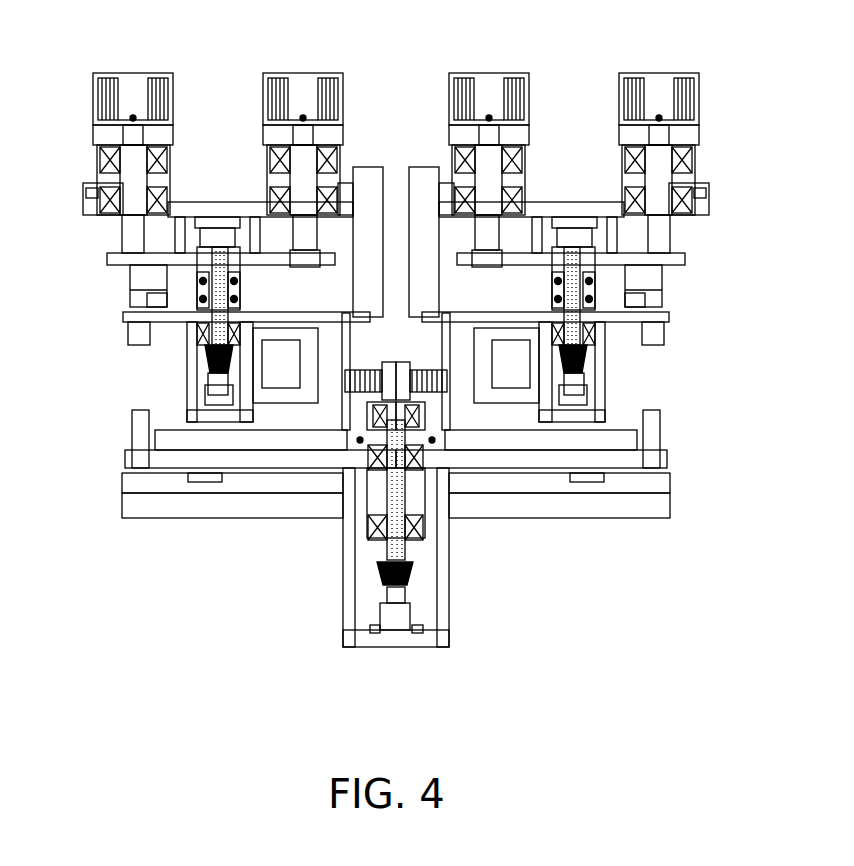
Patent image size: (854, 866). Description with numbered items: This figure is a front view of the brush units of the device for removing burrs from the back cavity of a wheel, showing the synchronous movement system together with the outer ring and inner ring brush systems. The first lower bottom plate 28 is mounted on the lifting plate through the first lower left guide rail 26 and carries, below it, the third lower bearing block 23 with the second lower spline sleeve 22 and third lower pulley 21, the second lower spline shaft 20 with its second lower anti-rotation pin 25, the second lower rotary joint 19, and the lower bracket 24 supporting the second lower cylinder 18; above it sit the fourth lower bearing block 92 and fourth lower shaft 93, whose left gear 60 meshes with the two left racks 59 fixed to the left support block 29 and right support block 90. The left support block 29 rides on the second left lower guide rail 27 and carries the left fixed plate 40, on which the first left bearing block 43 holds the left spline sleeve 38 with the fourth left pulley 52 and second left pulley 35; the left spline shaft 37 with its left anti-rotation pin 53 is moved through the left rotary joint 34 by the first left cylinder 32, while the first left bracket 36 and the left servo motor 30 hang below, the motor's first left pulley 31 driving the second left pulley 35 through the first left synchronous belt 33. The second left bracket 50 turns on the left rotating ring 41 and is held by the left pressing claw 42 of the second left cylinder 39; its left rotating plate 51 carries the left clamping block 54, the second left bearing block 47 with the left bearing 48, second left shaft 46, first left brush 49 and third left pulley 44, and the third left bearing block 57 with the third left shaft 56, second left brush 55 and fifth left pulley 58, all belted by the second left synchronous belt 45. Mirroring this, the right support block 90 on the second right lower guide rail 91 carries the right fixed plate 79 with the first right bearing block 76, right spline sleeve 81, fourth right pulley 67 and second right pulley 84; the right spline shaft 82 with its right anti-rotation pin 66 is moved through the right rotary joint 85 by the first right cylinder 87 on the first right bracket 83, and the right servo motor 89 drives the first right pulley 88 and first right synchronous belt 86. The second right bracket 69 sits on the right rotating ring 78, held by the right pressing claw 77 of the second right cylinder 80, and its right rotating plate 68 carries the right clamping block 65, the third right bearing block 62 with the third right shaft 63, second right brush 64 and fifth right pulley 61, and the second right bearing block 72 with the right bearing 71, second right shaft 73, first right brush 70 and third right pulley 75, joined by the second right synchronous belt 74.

The second lower cylinder 18 is at (397, 622).
The second lower rotary joint 19 is at (383, 616).
The second lower spline shaft 20 is at (397, 605).
The third lower pulley 21 is at (390, 585).
The second lower spline sleeve 22 is at (387, 553).
The third lower bearing block 23 is at (380, 528).
The lower bracket 24 is at (368, 515).
The second lower anti-rotation pin 25 is at (340, 425).
The first lower left guide rail 26 is at (300, 440).
The second left lower guide rail 27 is at (260, 462).
The first lower bottom plate 28 is at (215, 485).
The left support block 29 is at (150, 505).
The left servo motor 30 is at (125, 500).
The first left pulley 31 is at (124, 475).
The first left cylinder 32 is at (128, 452).
The first left synchronous belt 33 is at (157, 433).
The left rotary joint 34 is at (200, 418).
The second left pulley 35 is at (215, 400).
The first left bracket 36 is at (228, 380).
The left spline shaft 37 is at (195, 340).
The left spline sleeve 38 is at (200, 320).
The second left cylinder 39 is at (140, 315).
The left fixed plate 40 is at (132, 295).
The left rotating ring 41 is at (135, 290).
The left pressing claw 42 is at (145, 268).
The first left bearing block 43 is at (140, 240).
The third left pulley 44 is at (128, 230).
The second left synchronous belt 45 is at (130, 203).
The second left shaft 46 is at (117, 185).
The second left bearing block 47 is at (108, 167).
The left bearing 48 is at (102, 152).
The first left brush 49 is at (118, 132).
The second left bracket 50 is at (120, 112).
The left rotating plate 51 is at (137, 120).
The fourth left pulley 52 is at (170, 85).
The left anti-rotation pin 53 is at (205, 238).
The left clamping block 54 is at (220, 227).
The second left brush 55 is at (300, 168).
The third left shaft 56 is at (318, 240).
The third left bearing block 57 is at (330, 205).
The fifth left pulley 58 is at (343, 128).
The left racks 59 is at (340, 180).
The left gear 60 is at (378, 240).
The fifth right pulley 61 is at (465, 240).
The third right bearing block 62 is at (455, 165).
The third right shaft 63 is at (490, 163).
The second right brush 64 is at (520, 115).
The right clamping block 65 is at (575, 225).
The right anti-rotation pin 66 is at (587, 227).
The fourth right pulley 67 is at (612, 237).
The right rotating plate 68 is at (643, 127).
The second right bracket 69 is at (673, 130).
The first right brush 70 is at (677, 130).
The right bearing 71 is at (700, 150).
The second right bearing block 72 is at (687, 177).
The second right shaft 73 is at (697, 180).
The second right synchronous belt 74 is at (660, 203).
The third right pulley 75 is at (680, 222).
The first right bearing block 76 is at (650, 243).
The right pressing claw 77 is at (683, 252).
The right rotating ring 78 is at (625, 268).
The right fixed plate 79 is at (653, 290).
The second right cylinder 80 is at (645, 323).
The right spline sleeve 81 is at (640, 340).
The right spline shaft 82 is at (605, 322).
The first right bracket 83 is at (590, 345).
The second right pulley 84 is at (595, 380).
The right rotary joint 85 is at (580, 405).
The first right synchronous belt 86 is at (640, 418).
The first right cylinder 87 is at (650, 425).
The first right pulley 88 is at (657, 452).
The right servo motor 89 is at (657, 473).
The right support block 90 is at (567, 420).
The second right lower guide rail 91 is at (520, 433).
The fourth lower bearing block 92 is at (405, 428).
The fourth lower shaft 93 is at (407, 452).